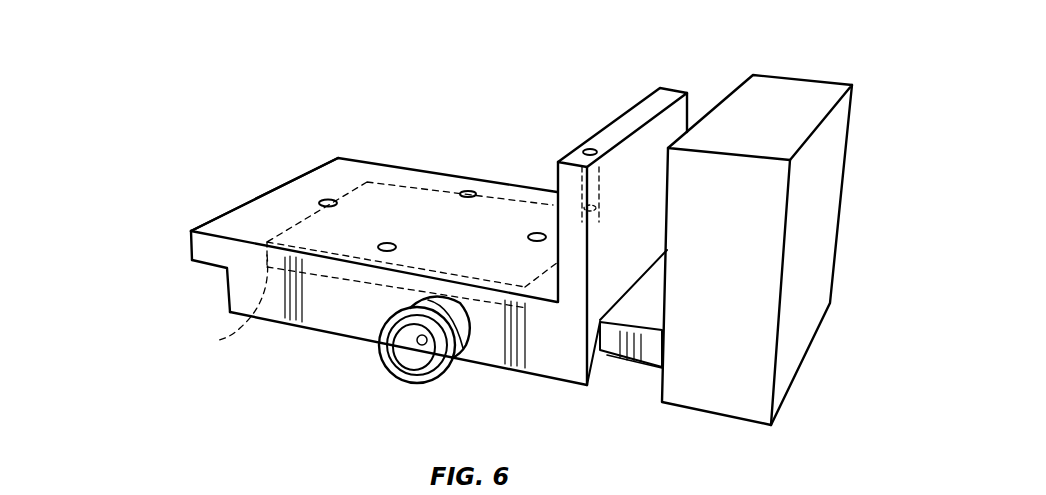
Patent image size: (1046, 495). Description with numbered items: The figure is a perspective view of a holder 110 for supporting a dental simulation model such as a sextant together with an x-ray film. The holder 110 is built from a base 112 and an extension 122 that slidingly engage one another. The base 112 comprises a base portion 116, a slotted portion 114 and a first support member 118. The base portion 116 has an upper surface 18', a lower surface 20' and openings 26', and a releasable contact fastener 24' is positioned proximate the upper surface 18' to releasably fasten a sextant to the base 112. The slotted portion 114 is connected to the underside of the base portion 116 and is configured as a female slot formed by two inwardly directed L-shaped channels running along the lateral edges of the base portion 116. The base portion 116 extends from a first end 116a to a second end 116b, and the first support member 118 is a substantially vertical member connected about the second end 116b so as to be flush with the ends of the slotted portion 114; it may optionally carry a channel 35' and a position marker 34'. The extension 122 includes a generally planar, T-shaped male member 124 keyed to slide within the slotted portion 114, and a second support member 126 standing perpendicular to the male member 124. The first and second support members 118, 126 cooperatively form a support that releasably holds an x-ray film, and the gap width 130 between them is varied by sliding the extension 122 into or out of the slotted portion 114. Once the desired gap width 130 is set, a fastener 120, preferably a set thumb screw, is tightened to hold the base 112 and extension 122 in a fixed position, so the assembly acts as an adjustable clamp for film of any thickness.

The holder 110 is at (420, 60).
The base 112 is at (367, 146).
The slotted portion 114 is at (352, 318).
The base portion 116 is at (241, 185).
The first end of base portion 116a is at (172, 244).
The second end of base portion 116b is at (552, 358).
The first support member 118 is at (648, 107).
The fastener 120 is at (418, 378).
The extension 122 is at (823, 53).
The male member 124 is at (632, 365).
The second support member 126 is at (852, 128).
The gap width 130 is at (703, 74).
The upper surface 18' is at (374, 216).
The lower surface 20' is at (179, 286).
The releasable contact fastener 24' is at (218, 299).
The openings 26' is at (412, 234).
The position marker 34' is at (541, 199).
The channel 35' is at (551, 131).